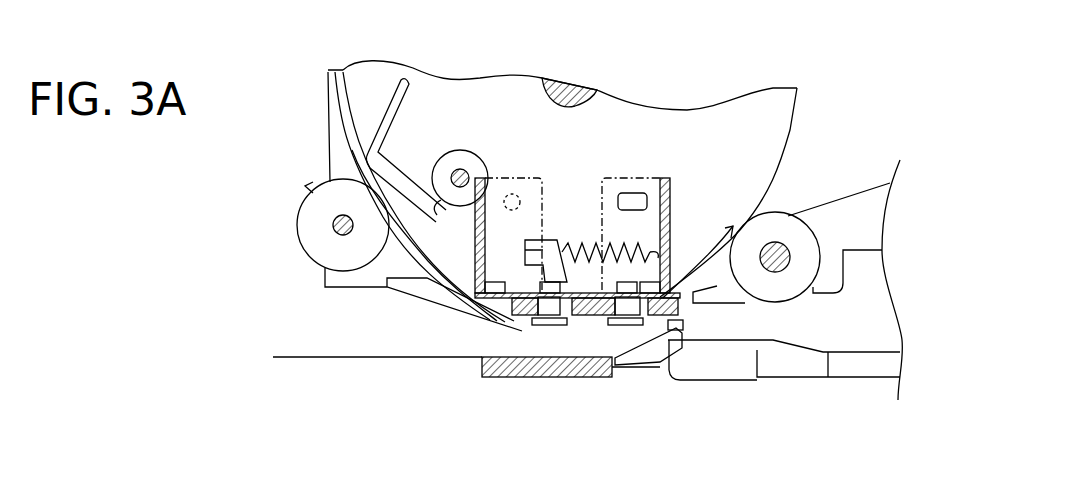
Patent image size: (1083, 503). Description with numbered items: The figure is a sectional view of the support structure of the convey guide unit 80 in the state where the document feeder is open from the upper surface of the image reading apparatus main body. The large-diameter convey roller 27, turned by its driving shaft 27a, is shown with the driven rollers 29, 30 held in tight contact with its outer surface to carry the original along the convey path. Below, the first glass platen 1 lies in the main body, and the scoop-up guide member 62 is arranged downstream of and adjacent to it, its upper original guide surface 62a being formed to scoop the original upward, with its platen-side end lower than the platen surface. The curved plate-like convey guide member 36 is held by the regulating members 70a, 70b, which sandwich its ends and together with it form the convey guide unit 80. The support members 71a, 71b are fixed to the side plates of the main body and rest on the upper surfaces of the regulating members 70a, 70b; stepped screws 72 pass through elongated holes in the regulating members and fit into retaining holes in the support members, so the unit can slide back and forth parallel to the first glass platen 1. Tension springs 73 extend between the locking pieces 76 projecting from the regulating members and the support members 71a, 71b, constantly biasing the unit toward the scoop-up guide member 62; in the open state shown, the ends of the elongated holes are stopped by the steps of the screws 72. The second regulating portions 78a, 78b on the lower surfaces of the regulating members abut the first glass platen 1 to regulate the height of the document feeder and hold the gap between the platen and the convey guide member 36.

The first glass platen 1 is at (493, 378).
The convey rollers 27 is at (633, 110).
The driving shaft 27a is at (568, 86).
The driven roller 29 is at (323, 238).
The driven roller 30 is at (785, 242).
The convey guide member 36 is at (757, 190).
The scoop-up guide member 62 is at (667, 372).
The original guide surface 62a is at (630, 340).
The regulating member 70a is at (606, 390).
The regulating member 70b is at (592, 316).
The support member 71a is at (608, 219).
The support member 71b is at (665, 235).
The stepped screw 72 is at (548, 326).
The tension spring 73 is at (585, 250).
The locking piece 76 is at (533, 243).
The second regulating portion 78a is at (547, 400).
The second regulating portion 78b is at (572, 326).
The convey guide unit 80 is at (430, 134).